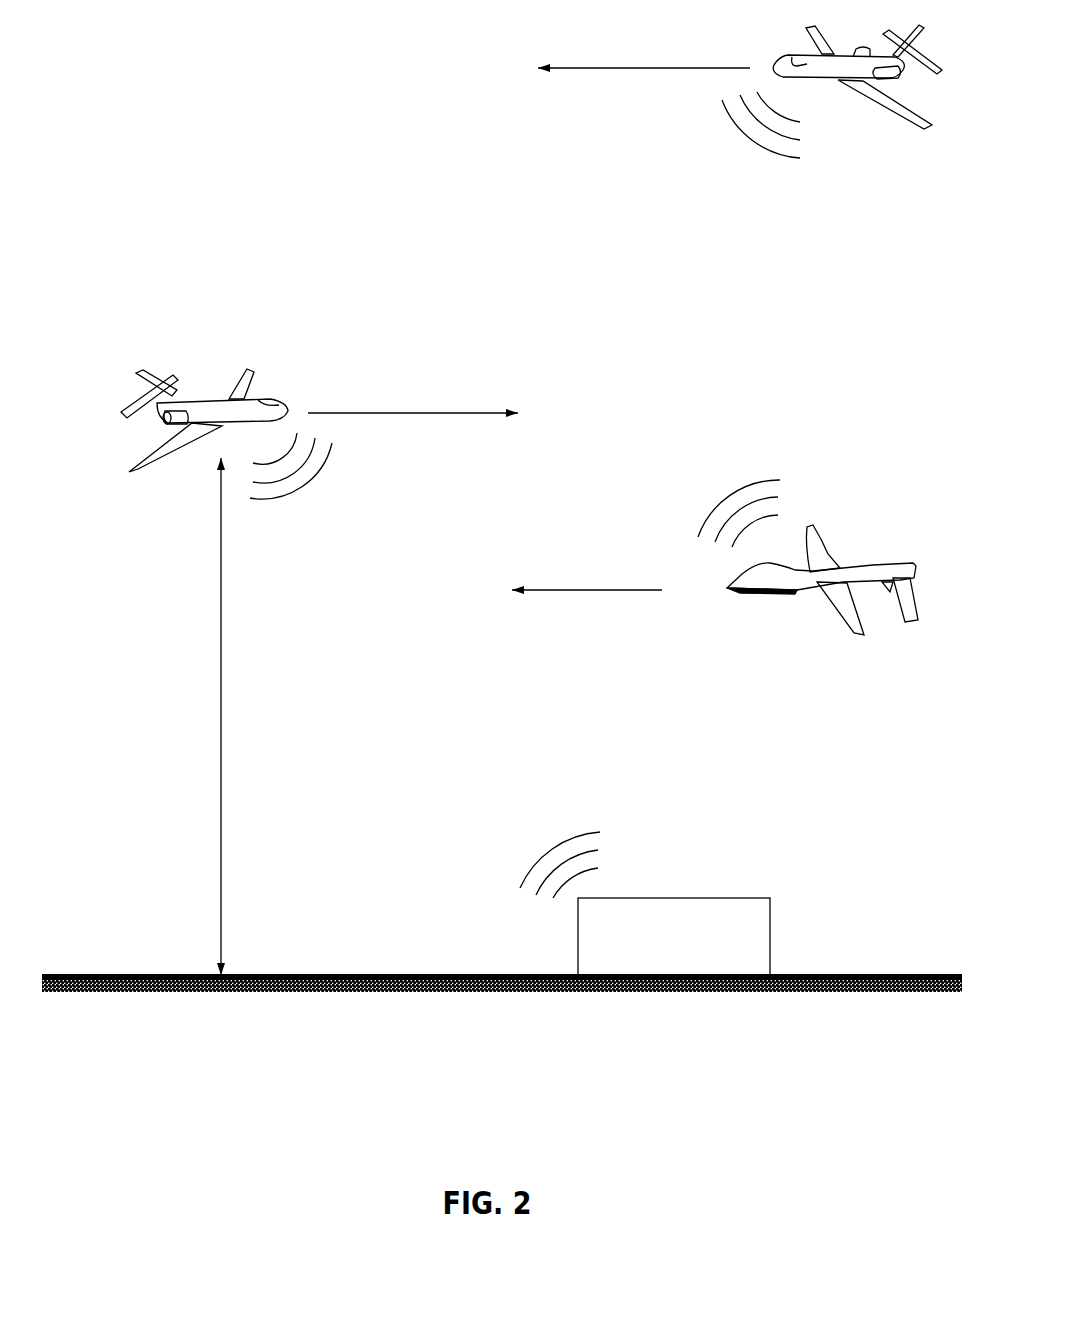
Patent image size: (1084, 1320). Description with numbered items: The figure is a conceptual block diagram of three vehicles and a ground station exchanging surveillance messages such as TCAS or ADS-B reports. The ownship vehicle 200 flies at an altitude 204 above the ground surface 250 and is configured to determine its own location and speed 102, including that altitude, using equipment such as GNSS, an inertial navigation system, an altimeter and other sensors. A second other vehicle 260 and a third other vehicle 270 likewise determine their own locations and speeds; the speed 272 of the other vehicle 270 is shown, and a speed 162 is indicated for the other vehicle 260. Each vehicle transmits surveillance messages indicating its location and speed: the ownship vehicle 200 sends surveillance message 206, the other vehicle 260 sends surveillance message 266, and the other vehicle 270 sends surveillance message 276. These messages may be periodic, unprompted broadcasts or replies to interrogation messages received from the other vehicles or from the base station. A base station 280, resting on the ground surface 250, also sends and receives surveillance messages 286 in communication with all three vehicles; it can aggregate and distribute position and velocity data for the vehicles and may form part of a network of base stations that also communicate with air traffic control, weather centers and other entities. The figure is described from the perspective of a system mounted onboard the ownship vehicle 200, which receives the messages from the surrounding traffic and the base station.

The ownship vehicle 200 is at (290, 313).
The speed of ownship vehicle 102 is at (398, 413).
The altitude 204 is at (222, 642).
The surveillance message 206 is at (287, 500).
The ground surface 250 is at (347, 975).
The other vehicle 260 is at (858, 192).
The speed of other vehicle 260 162 is at (660, 70).
The surveillance message 266 is at (738, 168).
The other vehicle 270 is at (802, 647).
The speed of vehicle 272 is at (637, 588).
The surveillance message 276 is at (708, 483).
The base station 280 is at (674, 936).
The surveillance messages 286 is at (530, 835).